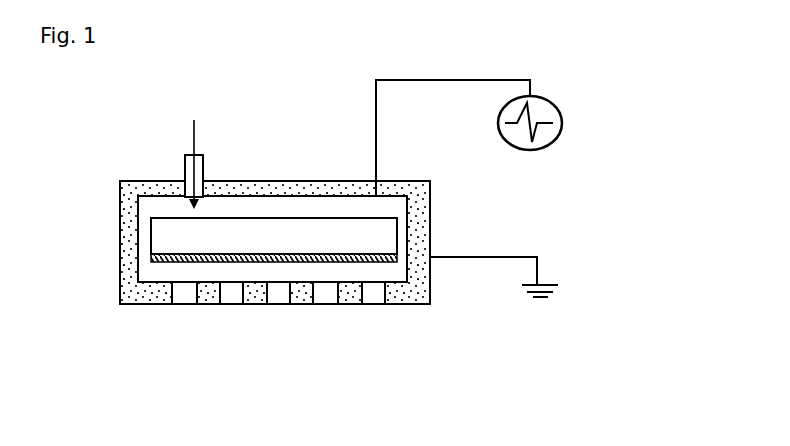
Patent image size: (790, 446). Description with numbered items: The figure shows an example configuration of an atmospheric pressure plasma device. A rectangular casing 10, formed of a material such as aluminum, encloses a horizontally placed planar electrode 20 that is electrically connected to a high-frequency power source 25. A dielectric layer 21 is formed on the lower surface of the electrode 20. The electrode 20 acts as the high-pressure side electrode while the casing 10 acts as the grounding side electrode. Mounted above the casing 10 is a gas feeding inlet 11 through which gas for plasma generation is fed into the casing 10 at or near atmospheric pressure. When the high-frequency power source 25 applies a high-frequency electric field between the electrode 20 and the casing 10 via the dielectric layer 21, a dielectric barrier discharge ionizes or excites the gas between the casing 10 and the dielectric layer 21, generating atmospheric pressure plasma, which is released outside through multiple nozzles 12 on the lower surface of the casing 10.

The casing 10 is at (430, 208).
The gas feeding inlet 11 is at (188, 160).
The nozzles 12 is at (183, 289).
The electrode 20 is at (297, 218).
The dielectric layer 21 is at (235, 253).
The high-frequency power source 25 is at (563, 123).